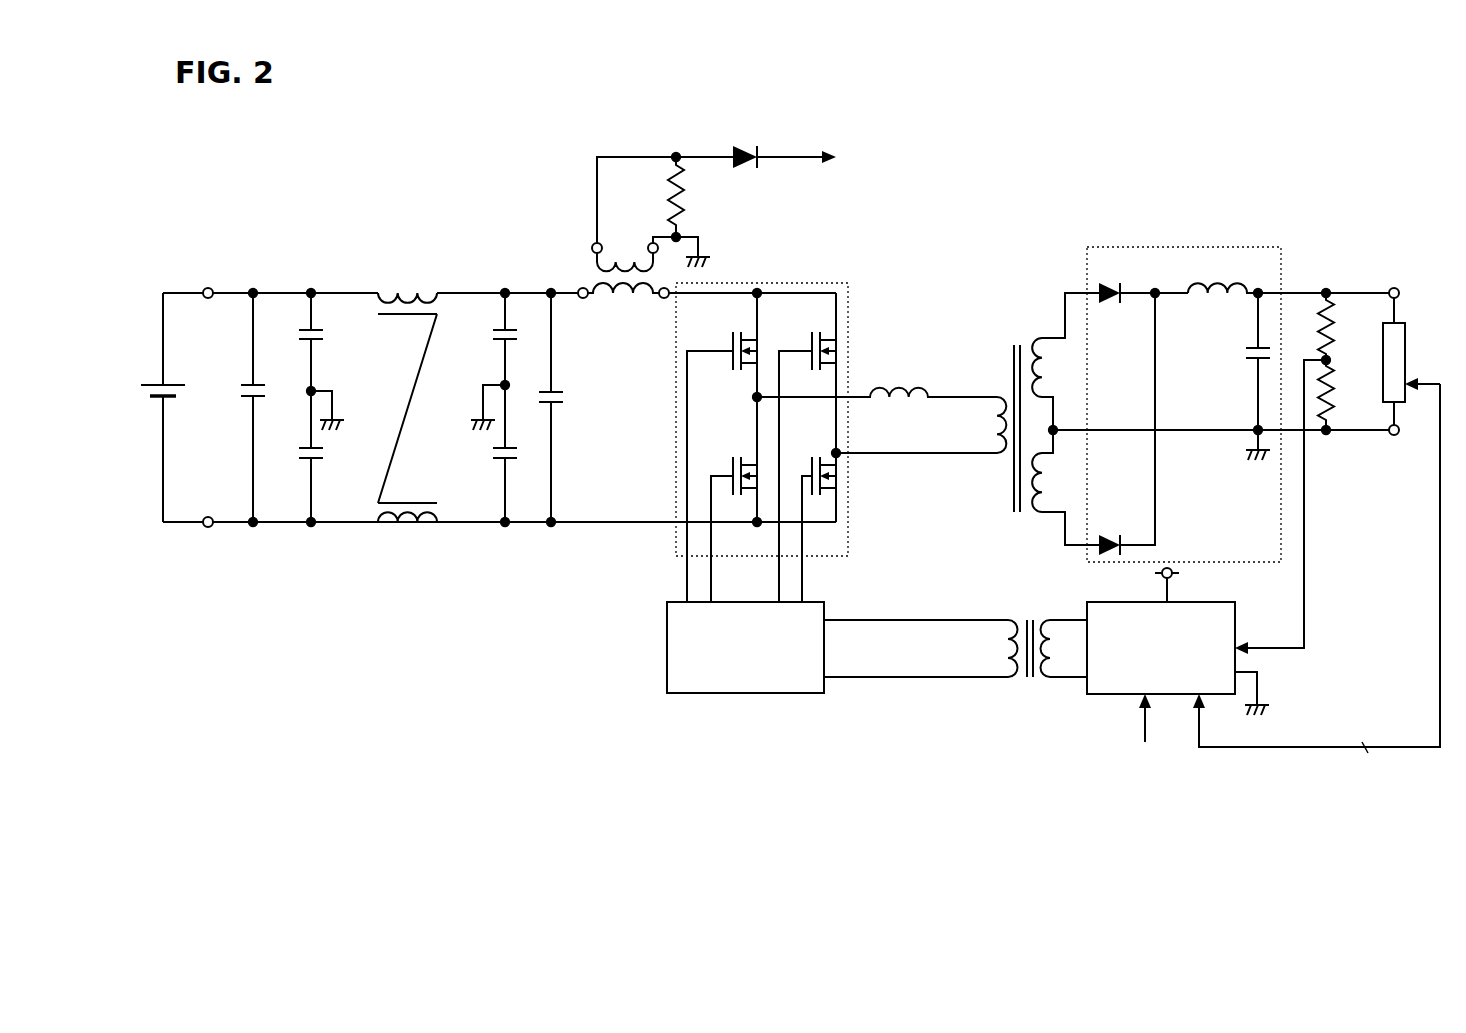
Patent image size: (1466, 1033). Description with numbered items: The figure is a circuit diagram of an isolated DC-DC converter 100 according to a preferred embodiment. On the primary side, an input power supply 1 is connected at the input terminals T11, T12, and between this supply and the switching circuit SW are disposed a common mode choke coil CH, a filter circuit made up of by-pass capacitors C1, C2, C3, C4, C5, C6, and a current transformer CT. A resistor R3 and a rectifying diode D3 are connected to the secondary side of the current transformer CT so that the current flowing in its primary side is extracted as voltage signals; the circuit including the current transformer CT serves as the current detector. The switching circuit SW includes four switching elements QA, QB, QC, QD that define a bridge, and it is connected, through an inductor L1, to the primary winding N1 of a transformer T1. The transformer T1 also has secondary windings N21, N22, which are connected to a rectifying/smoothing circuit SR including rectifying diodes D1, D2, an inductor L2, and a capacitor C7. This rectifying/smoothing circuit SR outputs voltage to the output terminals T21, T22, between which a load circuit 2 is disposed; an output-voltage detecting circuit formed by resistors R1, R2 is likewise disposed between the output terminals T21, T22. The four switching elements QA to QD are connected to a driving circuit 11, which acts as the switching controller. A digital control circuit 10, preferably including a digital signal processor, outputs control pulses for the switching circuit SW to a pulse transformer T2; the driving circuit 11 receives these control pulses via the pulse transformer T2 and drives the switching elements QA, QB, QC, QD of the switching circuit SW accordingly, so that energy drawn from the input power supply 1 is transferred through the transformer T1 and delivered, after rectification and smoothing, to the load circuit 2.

The isolated DC-DC converter 100 is at (1208, 120).
The input power supply 1 is at (138, 403).
The load circuit 2 is at (1406, 371).
The digital control circuit 10 is at (1237, 601).
The driving circuit 11 is at (826, 601).
The input terminal T11 is at (211, 287).
The input terminal T12 is at (208, 528).
The output terminal T21 is at (1397, 287).
The output terminal T22 is at (1391, 437).
The by-pass capacitor C1 is at (237, 408).
The by-pass capacitor C2 is at (330, 360).
The by-pass capacitor C3 is at (328, 459).
The by-pass capacitor C4 is at (489, 360).
The by-pass capacitor C5 is at (489, 456).
The by-pass capacitor C6 is at (566, 408).
The capacitor C7 is at (1244, 376).
The common mode choke coil CH is at (426, 258).
The current transformer CT is at (585, 272).
The resistor R3 is at (660, 197).
The rectifying diode D3 is at (756, 140).
The switching circuit SW is at (848, 283).
The switching element QA is at (722, 464).
The switching element QB is at (730, 517).
The switching element QC is at (806, 460).
The switching element QD is at (811, 514).
The inductor L1 is at (877, 379).
The transformer T1 is at (1011, 330).
The primary winding N1 is at (921, 425).
The secondary winding N21 is at (1065, 373).
The secondary winding N22 is at (1065, 499).
The rectifying/smoothing circuit SR is at (1281, 246).
The rectifying diode D1 is at (1142, 279).
The rectifying diode D2 is at (1127, 424).
The inductor L2 is at (1291, 277).
The resistor R1 is at (1344, 327).
The resistor R2 is at (1344, 397).
The pulse transformer T2 is at (1028, 704).